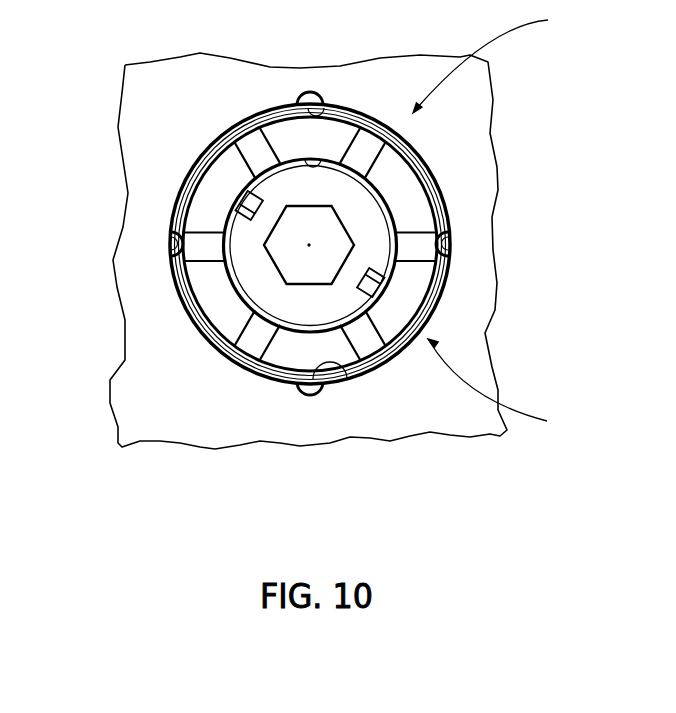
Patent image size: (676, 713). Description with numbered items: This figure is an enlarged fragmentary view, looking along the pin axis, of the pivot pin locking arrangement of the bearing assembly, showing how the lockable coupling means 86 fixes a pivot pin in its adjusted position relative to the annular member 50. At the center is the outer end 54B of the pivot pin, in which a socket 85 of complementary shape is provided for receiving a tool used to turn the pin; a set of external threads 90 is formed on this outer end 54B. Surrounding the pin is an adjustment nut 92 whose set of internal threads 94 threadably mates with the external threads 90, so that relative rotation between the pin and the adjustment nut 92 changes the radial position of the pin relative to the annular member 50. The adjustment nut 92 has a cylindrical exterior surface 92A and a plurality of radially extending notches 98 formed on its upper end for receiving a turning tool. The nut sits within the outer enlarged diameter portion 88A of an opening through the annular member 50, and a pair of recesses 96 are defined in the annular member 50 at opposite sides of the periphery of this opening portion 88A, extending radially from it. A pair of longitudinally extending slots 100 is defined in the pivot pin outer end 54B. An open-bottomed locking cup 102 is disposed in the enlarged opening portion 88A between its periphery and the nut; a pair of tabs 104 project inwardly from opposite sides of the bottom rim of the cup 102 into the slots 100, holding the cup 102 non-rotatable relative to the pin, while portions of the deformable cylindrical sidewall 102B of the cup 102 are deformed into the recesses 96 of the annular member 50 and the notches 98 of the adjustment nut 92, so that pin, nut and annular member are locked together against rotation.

The annular member 50 is at (480, 88).
The outer end of pivot pin 54B is at (372, 212).
The socket 85 is at (317, 257).
The lockable coupling means 86 is at (494, 59).
The outer enlarged diameter portion of opening 88A is at (417, 148).
The external threads 90 is at (394, 217).
The adjustment nut 92 is at (205, 295).
The cylindrical exterior surface 92A is at (218, 340).
The internal threads 94 is at (300, 225).
The recesses 96 is at (373, 143).
The radially extending notches 98 is at (248, 138).
The longitudinally extending slots 100 is at (506, 388).
The locking cup 102 is at (265, 382).
The deformable cylindrical sidewall 102B is at (426, 336).
The tabs 104 is at (240, 197).